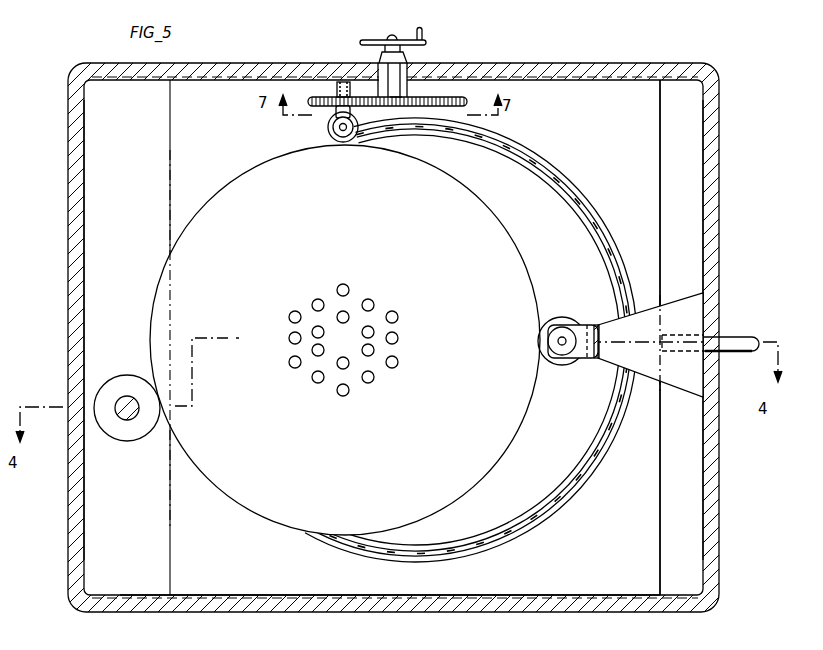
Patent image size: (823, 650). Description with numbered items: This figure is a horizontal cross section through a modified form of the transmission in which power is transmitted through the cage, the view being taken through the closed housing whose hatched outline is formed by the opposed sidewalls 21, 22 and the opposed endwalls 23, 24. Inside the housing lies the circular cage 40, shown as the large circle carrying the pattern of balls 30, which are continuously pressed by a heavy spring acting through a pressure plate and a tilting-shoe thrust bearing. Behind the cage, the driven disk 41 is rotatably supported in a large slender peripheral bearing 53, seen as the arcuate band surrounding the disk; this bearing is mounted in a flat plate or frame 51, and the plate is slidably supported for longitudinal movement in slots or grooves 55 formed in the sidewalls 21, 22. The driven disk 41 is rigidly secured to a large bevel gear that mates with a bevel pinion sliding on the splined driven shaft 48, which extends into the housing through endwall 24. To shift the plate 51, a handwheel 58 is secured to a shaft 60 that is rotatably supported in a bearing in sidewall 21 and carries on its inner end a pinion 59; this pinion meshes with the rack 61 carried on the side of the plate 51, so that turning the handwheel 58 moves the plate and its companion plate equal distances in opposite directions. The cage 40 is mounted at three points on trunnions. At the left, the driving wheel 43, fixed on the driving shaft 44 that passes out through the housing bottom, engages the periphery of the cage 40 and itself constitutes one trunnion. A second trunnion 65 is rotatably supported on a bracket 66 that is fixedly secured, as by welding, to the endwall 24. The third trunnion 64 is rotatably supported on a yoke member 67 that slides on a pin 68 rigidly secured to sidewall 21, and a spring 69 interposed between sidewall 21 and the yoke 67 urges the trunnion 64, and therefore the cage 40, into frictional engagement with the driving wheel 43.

The sidewall 21 is at (572, 76).
The sidewall 22 is at (628, 602).
The endwall 23 is at (68, 244).
The endwall 24 is at (708, 216).
The slots or grooves 55 is at (659, 79).
The flat plate or frame 51 is at (227, 130).
The circular cage 40 is at (235, 183).
The driven disk 41 is at (567, 243).
The peripheral bearing 53 is at (553, 181).
The balls 30 is at (396, 336).
The driving wheel 43 is at (134, 378).
The driving shaft 44 is at (134, 419).
The driven shaft 48 is at (739, 339).
The handwheel 58 is at (418, 29).
The pinion 59 is at (404, 99).
The shaft 60 is at (396, 78).
The rack 61 is at (442, 103).
The trunnion 64 is at (346, 142).
The trunnion 65 is at (567, 360).
The bracket 66 is at (682, 303).
The yoke member 67 is at (329, 129).
The pin 68 is at (349, 82).
The spring 69 is at (338, 92).